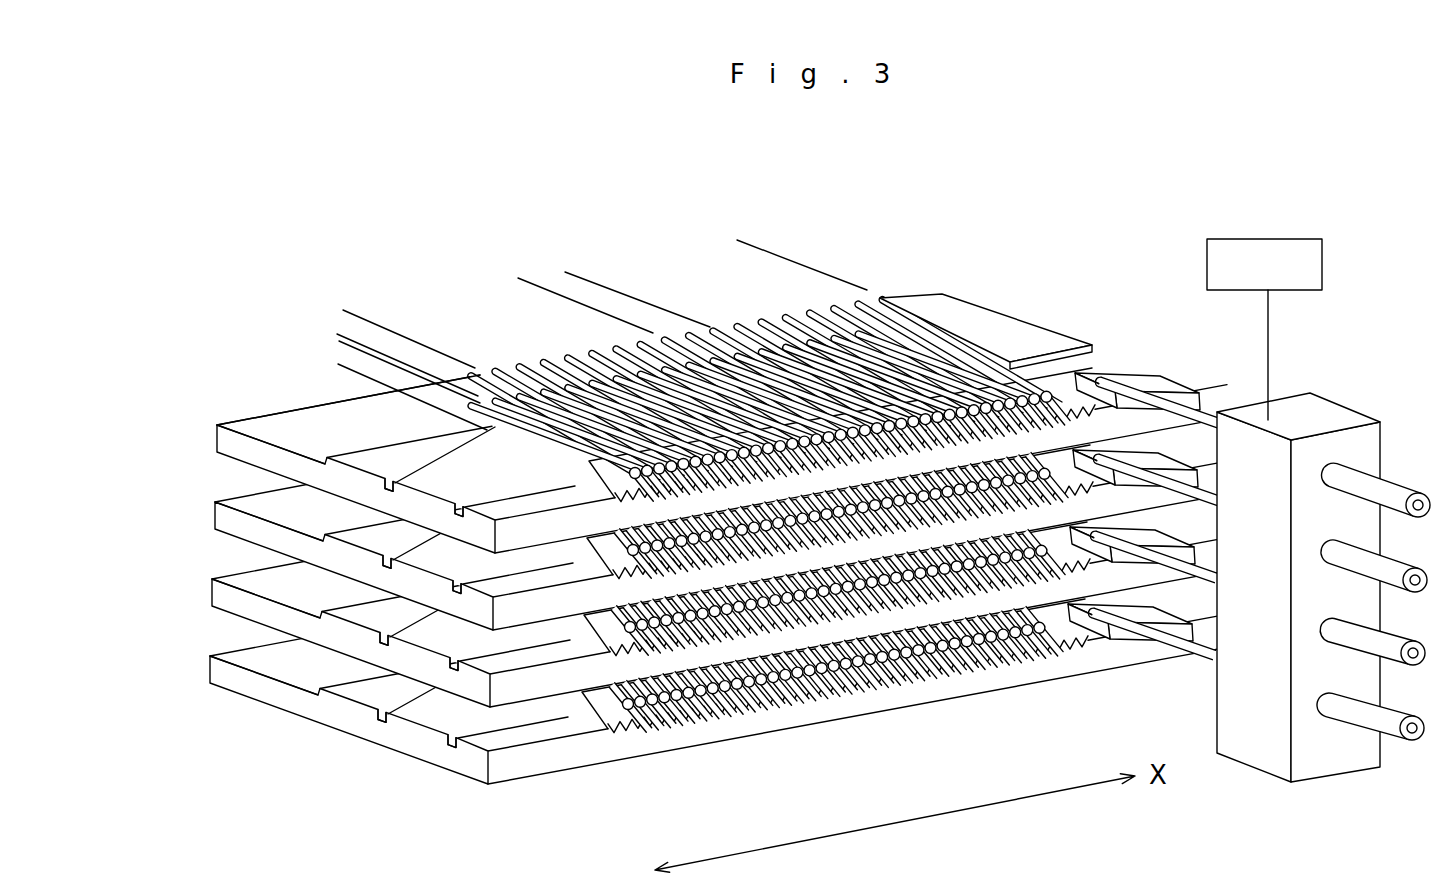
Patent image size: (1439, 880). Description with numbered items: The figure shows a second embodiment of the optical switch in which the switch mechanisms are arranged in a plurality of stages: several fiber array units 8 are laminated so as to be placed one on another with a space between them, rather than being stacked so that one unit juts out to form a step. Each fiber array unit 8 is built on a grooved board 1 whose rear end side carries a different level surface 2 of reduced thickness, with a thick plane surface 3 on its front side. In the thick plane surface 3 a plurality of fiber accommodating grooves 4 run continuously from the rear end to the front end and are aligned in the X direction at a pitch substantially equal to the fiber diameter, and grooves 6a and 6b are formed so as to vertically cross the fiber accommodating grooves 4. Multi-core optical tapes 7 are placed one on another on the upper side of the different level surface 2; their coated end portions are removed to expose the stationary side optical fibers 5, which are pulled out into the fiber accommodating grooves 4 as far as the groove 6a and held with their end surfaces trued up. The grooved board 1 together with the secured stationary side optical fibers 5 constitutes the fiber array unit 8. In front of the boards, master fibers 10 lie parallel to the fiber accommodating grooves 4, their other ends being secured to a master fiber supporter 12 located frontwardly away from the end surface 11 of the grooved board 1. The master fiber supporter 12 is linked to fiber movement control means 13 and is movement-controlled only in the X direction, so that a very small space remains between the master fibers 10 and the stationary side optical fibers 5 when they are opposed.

The grooved board 1 is at (230, 440).
The different level surface 2 is at (307, 422).
The thick plane surface 3 is at (1200, 372).
The fiber accommodating grooves 4 is at (1080, 402).
The stationary side optical fibers 5 is at (517, 428).
The groove 6a is at (456, 512).
The groove 6b is at (413, 481).
The multi-core optical tapes 7 is at (383, 312).
The fiber array unit 8 is at (262, 432).
The master fibers 10 is at (1190, 398).
The end surface 11 is at (527, 522).
The master fiber supporter 12 is at (1250, 768).
The fiber movement control means 13 is at (1205, 265).